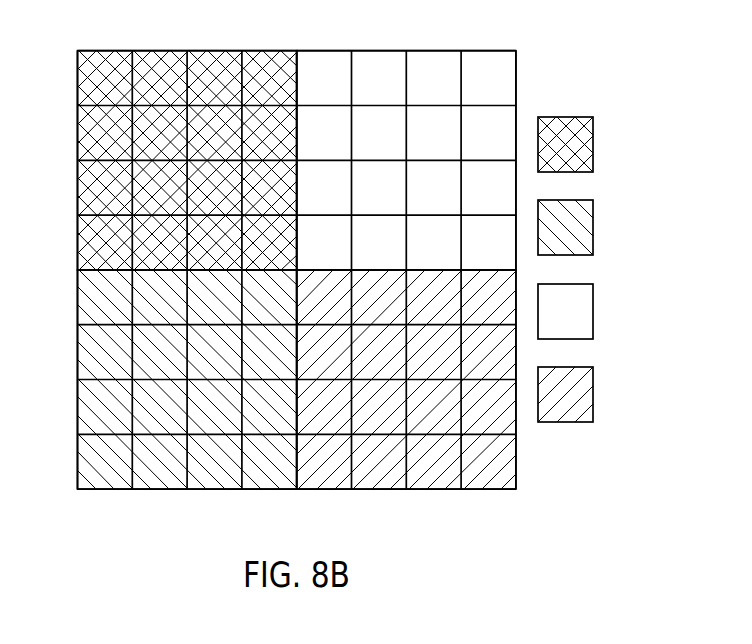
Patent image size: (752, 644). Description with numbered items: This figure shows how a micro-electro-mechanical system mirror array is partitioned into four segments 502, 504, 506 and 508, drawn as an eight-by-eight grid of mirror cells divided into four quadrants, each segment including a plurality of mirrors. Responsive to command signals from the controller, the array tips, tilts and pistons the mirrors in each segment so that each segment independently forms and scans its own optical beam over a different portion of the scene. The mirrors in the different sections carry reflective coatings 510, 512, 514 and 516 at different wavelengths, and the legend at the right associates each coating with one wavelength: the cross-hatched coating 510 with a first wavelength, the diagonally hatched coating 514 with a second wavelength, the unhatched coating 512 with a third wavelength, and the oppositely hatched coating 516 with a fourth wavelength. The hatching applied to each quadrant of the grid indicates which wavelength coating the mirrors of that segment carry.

The segment 502 is at (193, 41).
The segment 504 is at (410, 41).
The segment 506 is at (185, 501).
The segment 508 is at (404, 501).
The reflective coating 510 is at (566, 117).
The reflective coating 514 is at (566, 200).
The reflective coating 512 is at (566, 284).
The reflective coating 516 is at (566, 367).